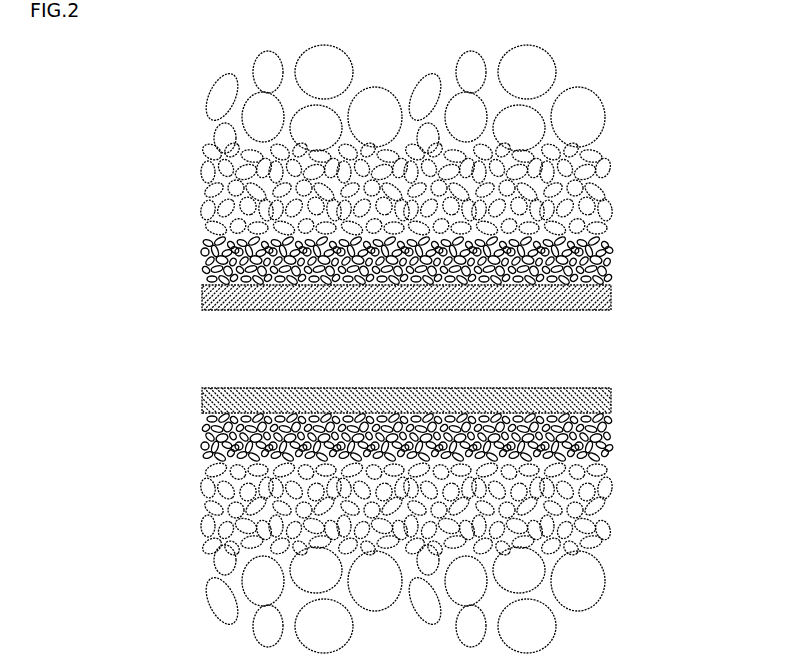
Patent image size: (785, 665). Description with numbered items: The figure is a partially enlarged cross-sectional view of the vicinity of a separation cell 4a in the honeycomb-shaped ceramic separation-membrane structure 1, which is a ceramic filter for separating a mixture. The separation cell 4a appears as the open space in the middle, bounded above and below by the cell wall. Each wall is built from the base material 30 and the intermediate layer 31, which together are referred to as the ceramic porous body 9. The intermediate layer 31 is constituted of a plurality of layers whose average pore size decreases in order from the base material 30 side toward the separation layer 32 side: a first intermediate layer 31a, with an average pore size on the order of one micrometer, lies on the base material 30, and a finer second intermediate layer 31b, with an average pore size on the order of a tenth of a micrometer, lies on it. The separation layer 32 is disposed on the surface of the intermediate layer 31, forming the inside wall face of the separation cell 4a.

The honeycomb-shaped ceramic separation-membrane structure 1 is at (731, 343).
The separation cell 4a is at (218, 347).
The porous body 9 is at (474, 349).
The base material 30 is at (628, 45).
The intermediate layer 31 is at (457, 348).
The first intermediate layer 31a is at (628, 143).
The second intermediate layer 31b is at (436, 348).
The separation layer 32 is at (611, 307).